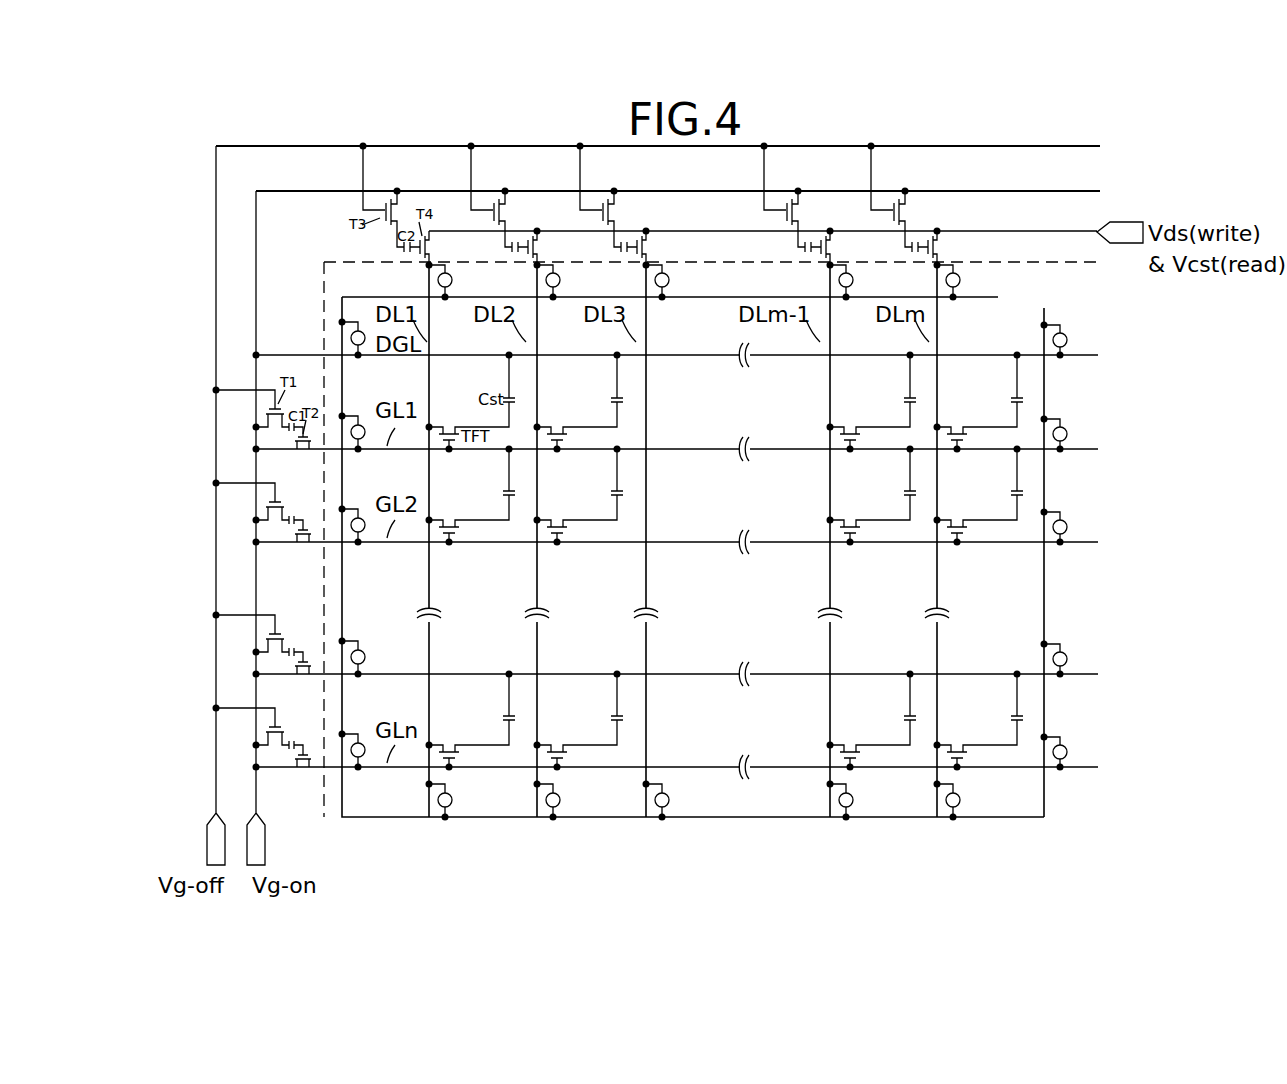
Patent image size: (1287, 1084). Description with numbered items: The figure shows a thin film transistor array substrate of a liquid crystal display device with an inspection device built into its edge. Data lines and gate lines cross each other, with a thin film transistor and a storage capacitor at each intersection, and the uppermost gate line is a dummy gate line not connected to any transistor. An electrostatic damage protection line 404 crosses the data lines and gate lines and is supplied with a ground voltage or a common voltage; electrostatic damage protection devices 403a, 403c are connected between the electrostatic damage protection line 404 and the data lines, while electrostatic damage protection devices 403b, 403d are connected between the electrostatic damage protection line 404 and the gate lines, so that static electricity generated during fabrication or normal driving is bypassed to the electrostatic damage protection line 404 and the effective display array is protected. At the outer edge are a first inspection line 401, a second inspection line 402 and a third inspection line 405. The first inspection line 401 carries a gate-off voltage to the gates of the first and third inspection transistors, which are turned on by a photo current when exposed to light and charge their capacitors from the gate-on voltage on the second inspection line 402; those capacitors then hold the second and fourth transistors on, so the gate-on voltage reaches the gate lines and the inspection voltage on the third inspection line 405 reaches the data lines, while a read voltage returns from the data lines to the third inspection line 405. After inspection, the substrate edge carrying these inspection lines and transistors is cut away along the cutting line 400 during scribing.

The cutting line 400 is at (1068, 262).
The first inspection line 401 is at (216, 275).
The second inspection line 402 is at (256, 313).
The electrostatic damage protection device 403a is at (960, 280).
The electrostatic damage protection device 403b is at (367, 426).
The electrostatic damage protection device 403c is at (960, 800).
The electrostatic damage protection device 403d is at (1067, 752).
The electrostatic damage protection line 404 is at (1000, 300).
The third inspection line 405 is at (1035, 232).